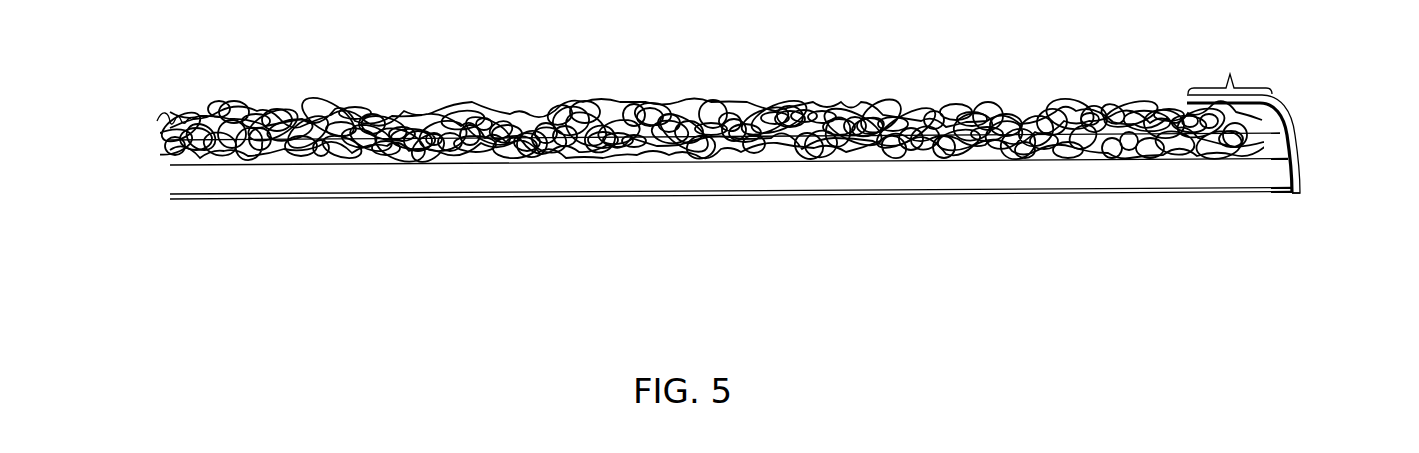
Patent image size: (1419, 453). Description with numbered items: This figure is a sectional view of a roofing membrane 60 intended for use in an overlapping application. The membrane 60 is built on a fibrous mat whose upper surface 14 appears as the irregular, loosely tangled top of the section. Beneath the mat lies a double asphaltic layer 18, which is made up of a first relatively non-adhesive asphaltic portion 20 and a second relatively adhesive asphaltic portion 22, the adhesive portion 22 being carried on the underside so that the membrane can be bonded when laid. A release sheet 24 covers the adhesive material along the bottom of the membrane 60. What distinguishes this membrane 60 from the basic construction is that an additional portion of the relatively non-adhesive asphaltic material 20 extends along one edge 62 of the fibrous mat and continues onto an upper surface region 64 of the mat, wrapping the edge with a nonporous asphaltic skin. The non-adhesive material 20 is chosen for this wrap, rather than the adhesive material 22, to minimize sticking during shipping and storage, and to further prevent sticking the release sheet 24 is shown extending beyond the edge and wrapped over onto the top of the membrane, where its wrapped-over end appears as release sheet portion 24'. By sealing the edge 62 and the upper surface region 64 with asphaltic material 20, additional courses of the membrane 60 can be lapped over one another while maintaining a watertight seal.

The upper surface 14 is at (713, 112).
The double asphaltic layer 18 is at (143, 140).
The first relatively non-adhesive asphaltic portion 20 is at (190, 109).
The second relatively adhesive asphaltic portion 22 is at (179, 178).
The release sheet 24 is at (731, 225).
The backing layer edge 24' is at (1350, 195).
The membrane 60 is at (1175, 37).
The edge of the fibrous mat 62 is at (1297, 140).
The upper surface region of the mat 64 is at (1230, 66).